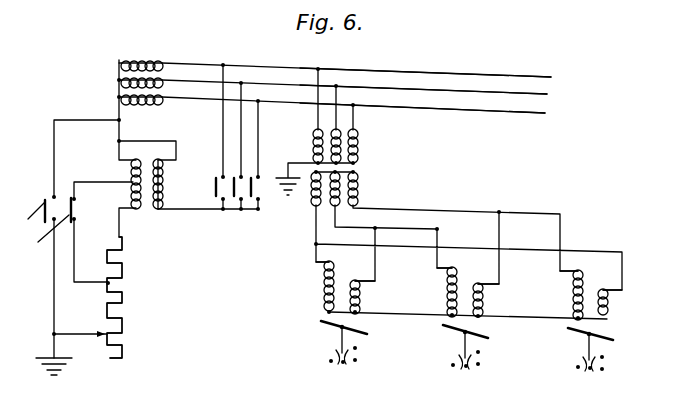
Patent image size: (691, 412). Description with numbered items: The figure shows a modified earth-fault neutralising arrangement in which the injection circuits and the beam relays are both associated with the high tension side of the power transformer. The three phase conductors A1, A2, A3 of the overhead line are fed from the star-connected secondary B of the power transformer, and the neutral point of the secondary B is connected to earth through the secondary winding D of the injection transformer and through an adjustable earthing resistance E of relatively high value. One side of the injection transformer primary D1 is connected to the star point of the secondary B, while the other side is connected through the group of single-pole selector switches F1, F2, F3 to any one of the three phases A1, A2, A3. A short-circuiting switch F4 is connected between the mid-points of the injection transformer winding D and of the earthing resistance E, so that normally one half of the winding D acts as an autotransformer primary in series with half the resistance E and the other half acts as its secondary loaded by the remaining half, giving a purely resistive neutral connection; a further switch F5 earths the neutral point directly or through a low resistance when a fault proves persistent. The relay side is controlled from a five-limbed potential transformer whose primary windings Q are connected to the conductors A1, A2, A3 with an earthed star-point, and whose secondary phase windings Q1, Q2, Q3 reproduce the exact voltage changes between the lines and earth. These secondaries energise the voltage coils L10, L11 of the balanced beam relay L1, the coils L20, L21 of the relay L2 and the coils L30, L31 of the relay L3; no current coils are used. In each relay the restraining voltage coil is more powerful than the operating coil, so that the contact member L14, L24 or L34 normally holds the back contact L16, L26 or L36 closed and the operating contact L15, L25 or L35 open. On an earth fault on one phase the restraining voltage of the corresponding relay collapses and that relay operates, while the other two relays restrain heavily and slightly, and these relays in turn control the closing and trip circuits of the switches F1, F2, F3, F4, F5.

The star-connected secondary of the power transformer B is at (136, 72).
The phase conductor A1 is at (449, 74).
The phase conductor A2 is at (500, 93).
The phase conductor A3 is at (536, 112).
The injection transformer secondary winding D is at (130, 175).
The injection transformer primary winding D1 is at (165, 182).
The single-pole switch F1 is at (213, 197).
The single-pole switch F2 is at (226, 210).
The single-pole switch F3 is at (252, 197).
The short-circuiting switch F4 is at (45, 234).
The earthing switch F5 is at (30, 221).
The earthing resistance E is at (123, 298).
The primary windings of the potential transformer Q is at (338, 147).
The secondary phase winding of the potential transformer Q1 is at (312, 200).
The secondary phase winding of the potential transformer Q2 is at (339, 188).
The secondary phase winding of the potential transformer Q3 is at (358, 199).
The balanced beam relay L1 is at (345, 265).
The operating voltage coil L10 is at (362, 298).
The restraining voltage coil L11 is at (323, 285).
The relay contact member L14 is at (346, 337).
The operating contact L15 is at (358, 356).
The back contact L16 is at (331, 356).
The balanced beam relay L2 is at (468, 271).
The operating voltage coil L20 is at (484, 302).
The restraining voltage coil L21 is at (447, 292).
The relay contact member L24 is at (469, 341).
The operating contact L25 is at (493, 368).
The back contact L26 is at (455, 360).
The balanced beam relay L3 is at (591, 275).
The operating voltage coil L30 is at (610, 303).
The restraining voltage coil L31 is at (572, 292).
The relay contact member L34 is at (593, 343).
The operating contact L35 is at (605, 368).
The back contact L36 is at (578, 360).